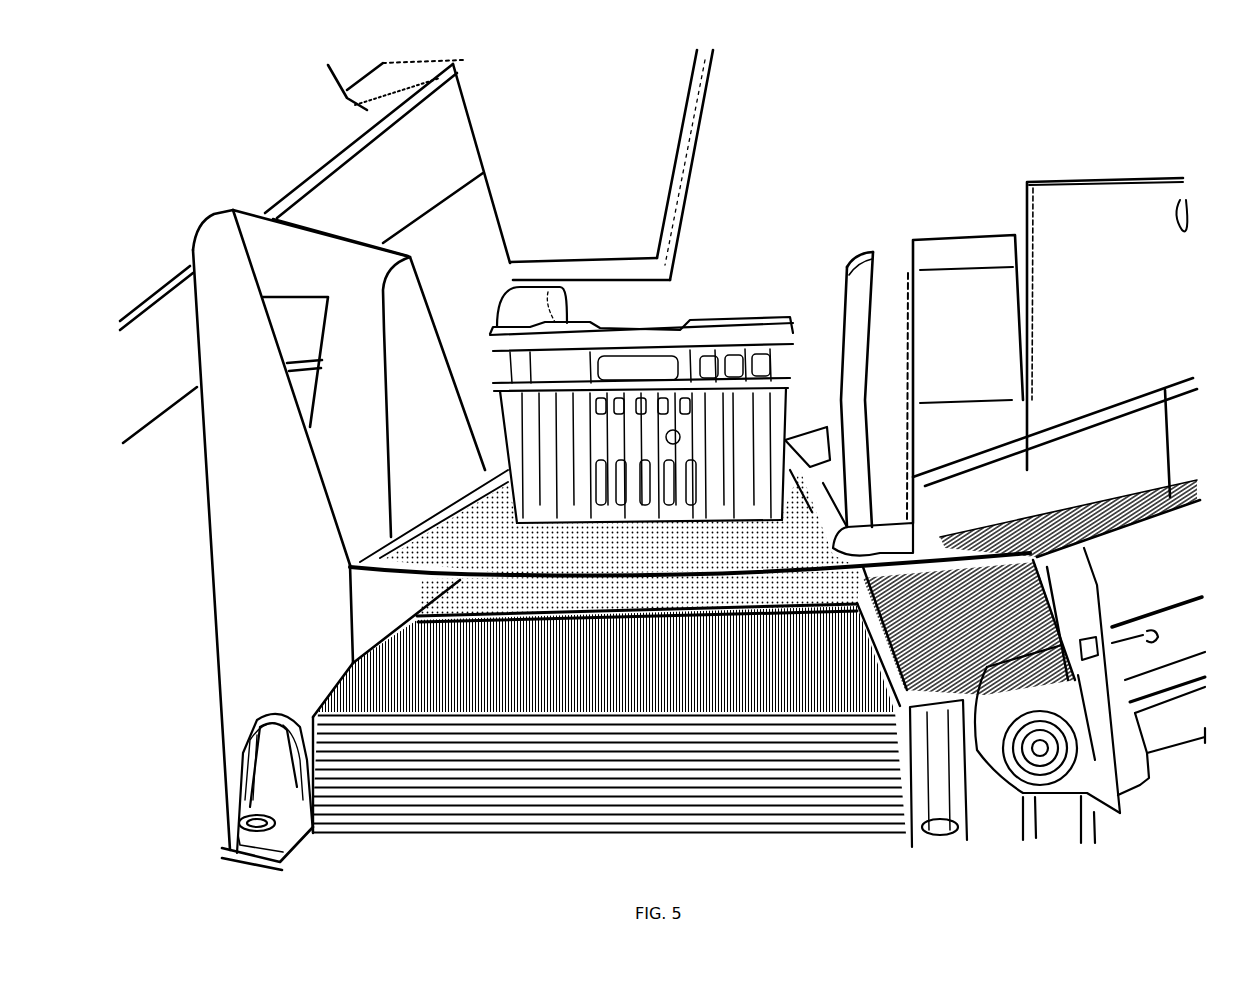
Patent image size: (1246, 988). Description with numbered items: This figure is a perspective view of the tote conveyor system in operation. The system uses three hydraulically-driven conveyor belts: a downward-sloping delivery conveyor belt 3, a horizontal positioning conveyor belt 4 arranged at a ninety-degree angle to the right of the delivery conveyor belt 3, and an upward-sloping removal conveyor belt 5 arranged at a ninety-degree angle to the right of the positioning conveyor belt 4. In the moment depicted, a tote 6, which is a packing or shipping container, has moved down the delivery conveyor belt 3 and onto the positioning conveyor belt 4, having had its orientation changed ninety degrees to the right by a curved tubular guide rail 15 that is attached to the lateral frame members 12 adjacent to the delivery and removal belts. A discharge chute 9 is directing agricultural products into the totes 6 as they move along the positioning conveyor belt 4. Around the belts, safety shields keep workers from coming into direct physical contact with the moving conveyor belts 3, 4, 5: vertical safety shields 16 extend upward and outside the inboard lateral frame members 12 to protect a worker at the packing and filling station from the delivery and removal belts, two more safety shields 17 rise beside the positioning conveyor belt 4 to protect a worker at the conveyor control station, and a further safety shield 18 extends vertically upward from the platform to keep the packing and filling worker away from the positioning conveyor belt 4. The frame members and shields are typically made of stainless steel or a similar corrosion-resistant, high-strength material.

The delivery conveyor belt 3 is at (987, 667).
The positioning conveyor belt 4 is at (495, 817).
The removal conveyor belt 5 is at (813, 440).
The tote 6 is at (740, 313).
The discharge chute 9 is at (647, 180).
The lateral frame member 12 is at (1082, 420).
The tubular guide rail 15 is at (871, 556).
The vertical safety shield 16 is at (973, 233).
The safety shield 17 is at (367, 317).
The safety shield 18 is at (888, 250).